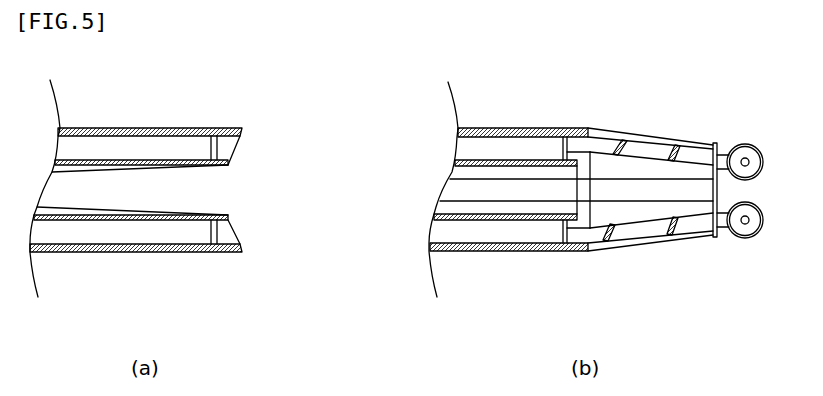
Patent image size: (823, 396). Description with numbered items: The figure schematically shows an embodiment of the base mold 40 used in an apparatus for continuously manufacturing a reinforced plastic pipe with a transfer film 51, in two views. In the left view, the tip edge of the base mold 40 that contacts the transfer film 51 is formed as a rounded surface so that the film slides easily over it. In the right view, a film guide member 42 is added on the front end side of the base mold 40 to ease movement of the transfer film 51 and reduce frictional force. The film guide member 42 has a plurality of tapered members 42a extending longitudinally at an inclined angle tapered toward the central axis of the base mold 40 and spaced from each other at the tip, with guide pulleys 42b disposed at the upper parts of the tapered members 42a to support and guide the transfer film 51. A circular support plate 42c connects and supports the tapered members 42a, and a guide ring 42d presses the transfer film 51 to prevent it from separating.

The base mold 40 is at (97, 128).
The transfer film 51 is at (163, 128).
The film guide member 42 is at (665, 212).
The tapered member 42a is at (637, 233).
The guide pulley 42b is at (748, 240).
The circular support plate 42c is at (720, 146).
The guide ring 42d is at (712, 190).